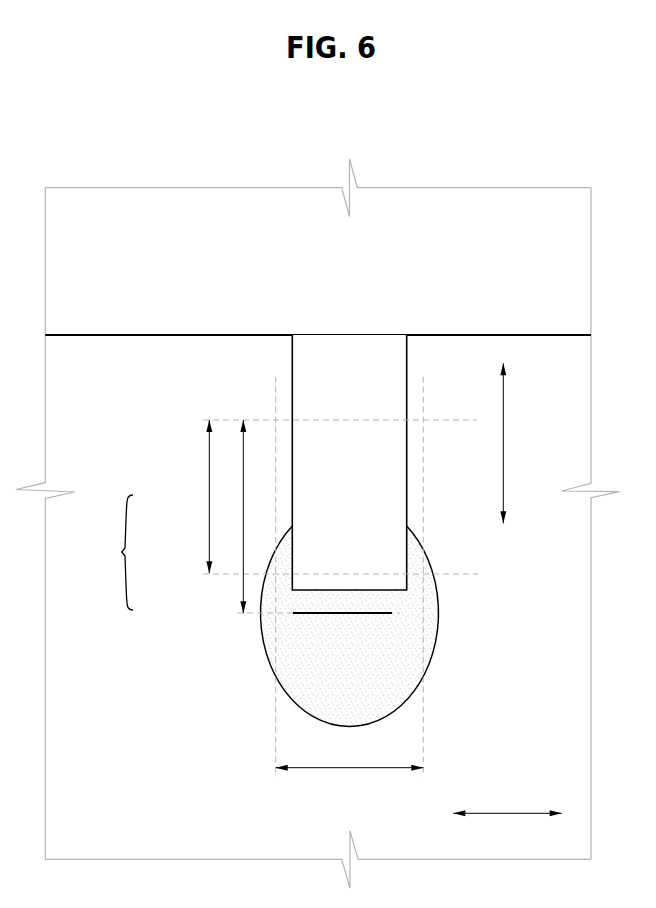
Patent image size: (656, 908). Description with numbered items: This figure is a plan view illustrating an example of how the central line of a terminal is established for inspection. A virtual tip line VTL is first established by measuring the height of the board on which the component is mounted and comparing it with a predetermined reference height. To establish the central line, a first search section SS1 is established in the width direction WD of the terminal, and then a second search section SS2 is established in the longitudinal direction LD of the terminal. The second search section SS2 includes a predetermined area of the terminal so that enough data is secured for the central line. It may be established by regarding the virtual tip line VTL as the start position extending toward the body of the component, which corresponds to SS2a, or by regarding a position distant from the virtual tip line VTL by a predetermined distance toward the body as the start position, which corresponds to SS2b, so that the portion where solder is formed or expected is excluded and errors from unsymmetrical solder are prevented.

The virtual tip line VTL is at (393, 613).
The second search section start position distant from the virtual tip line SS2b is at (209, 502).
The second search section start position at the virtual tip line SS2a is at (243, 583).
The second search section SS2 is at (109, 552).
The longitudinal direction LD is at (516, 443).
The first search section SS1 is at (350, 781).
The width direction WD is at (507, 827).